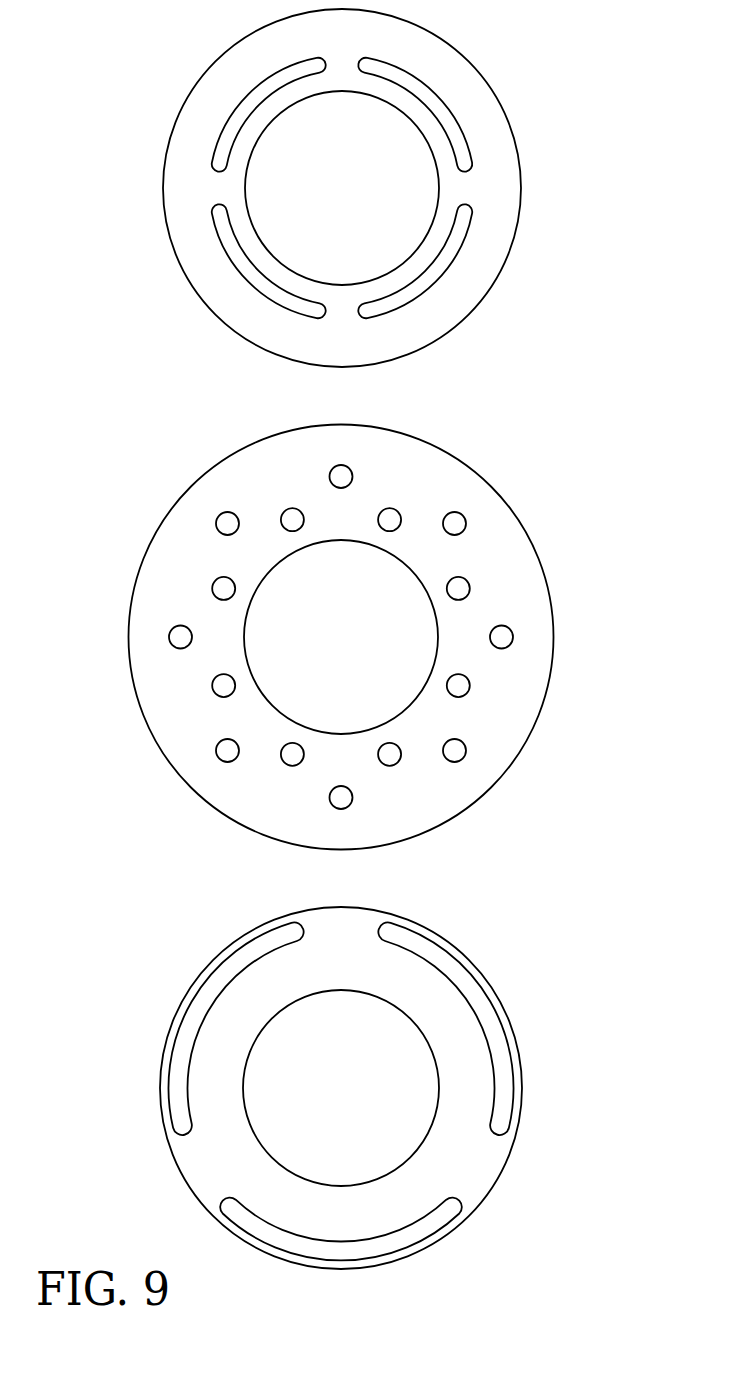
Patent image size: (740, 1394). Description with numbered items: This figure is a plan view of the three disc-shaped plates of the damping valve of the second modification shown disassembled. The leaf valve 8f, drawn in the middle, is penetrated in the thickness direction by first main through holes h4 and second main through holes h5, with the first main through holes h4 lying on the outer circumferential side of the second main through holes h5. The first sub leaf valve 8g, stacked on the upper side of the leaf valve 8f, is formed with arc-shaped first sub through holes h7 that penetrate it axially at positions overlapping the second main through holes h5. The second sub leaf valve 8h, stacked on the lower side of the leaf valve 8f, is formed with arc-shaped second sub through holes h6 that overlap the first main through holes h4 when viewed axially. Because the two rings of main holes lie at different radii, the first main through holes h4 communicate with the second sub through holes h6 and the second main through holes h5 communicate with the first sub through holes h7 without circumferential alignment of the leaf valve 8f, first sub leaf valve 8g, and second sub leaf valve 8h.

The first sub leaf valve 8g is at (497, 170).
The first sub through holes h7 is at (230, 115).
The leaf valve 8f is at (552, 602).
The first main through holes h4 is at (467, 515).
The second main through holes h5 is at (291, 509).
The second sub leaf valve 8h is at (500, 1167).
The second sub through holes h6 is at (170, 1042).